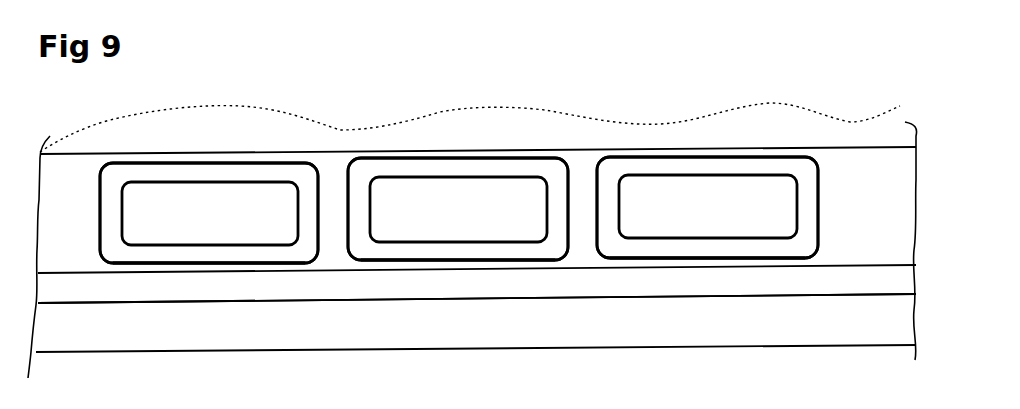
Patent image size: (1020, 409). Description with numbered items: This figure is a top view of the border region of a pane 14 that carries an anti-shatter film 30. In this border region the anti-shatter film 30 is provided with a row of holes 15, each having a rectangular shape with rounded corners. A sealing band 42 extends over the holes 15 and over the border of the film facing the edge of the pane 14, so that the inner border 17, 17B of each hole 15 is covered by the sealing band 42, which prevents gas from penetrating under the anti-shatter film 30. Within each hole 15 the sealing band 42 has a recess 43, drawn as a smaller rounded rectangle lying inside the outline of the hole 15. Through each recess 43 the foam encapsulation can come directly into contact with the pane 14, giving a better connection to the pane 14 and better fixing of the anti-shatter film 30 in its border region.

The pane 14 is at (687, 328).
The anti-shatter film 30 is at (556, 281).
The sealing band 42 is at (95, 302).
The holes 15 is at (299, 177).
The inner border of the holes 17 is at (208, 163).
The inner border of the holes 17B is at (200, 258).
The recesses 43 is at (226, 227).